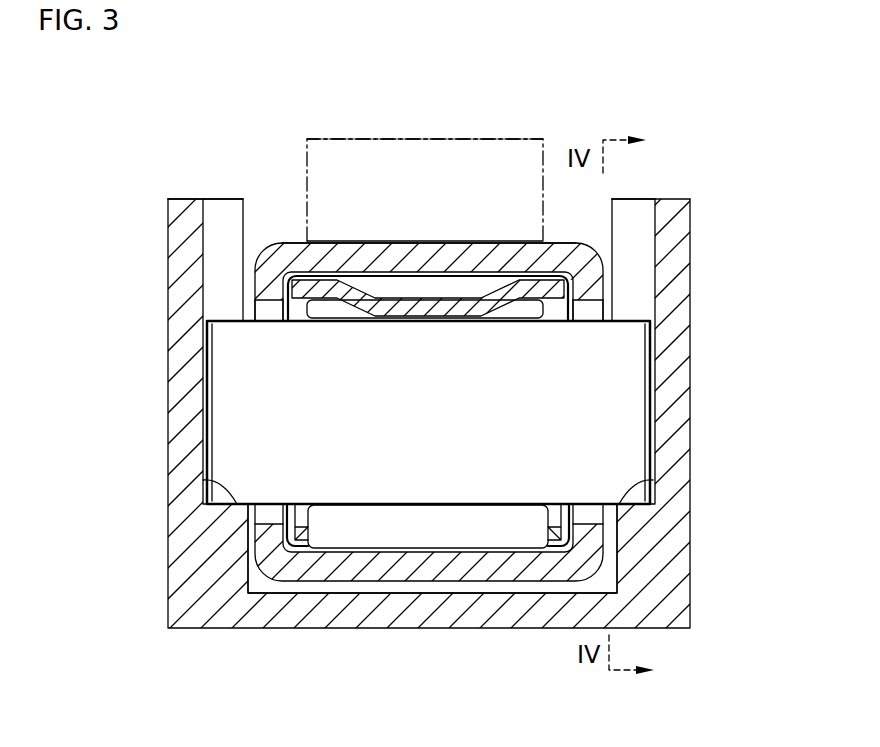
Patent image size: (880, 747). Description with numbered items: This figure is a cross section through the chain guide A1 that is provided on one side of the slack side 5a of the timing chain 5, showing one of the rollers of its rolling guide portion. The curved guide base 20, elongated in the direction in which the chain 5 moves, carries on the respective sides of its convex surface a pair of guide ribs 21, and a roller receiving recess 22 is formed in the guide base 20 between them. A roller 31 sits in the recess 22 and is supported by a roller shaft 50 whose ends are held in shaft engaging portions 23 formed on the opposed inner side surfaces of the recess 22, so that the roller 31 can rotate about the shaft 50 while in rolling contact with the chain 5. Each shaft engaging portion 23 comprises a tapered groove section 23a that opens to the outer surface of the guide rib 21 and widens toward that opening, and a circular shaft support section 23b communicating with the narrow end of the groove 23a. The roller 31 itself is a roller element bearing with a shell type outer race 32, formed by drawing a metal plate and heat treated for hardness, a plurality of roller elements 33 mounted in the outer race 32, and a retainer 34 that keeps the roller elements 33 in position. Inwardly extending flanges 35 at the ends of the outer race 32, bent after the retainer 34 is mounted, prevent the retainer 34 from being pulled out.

The timing chain 5 is at (337, 130).
The slack side 5a is at (440, 139).
The guide base 20 is at (168, 578).
The guide ribs 21 is at (176, 249).
The roller receiving recess 22 is at (267, 584).
The shaft engaging portion 23 is at (212, 302).
The tapered groove section 23a is at (204, 214).
The circular shaft support section 23b is at (203, 480).
The roller 31 is at (272, 236).
The outer race 32 is at (372, 258).
The roller elements 33 is at (430, 280).
The retainer 34 is at (520, 290).
The inwardly extending flanges 35 is at (262, 303).
The roller shaft 50 is at (446, 425).
The chain guide A1 is at (160, 196).